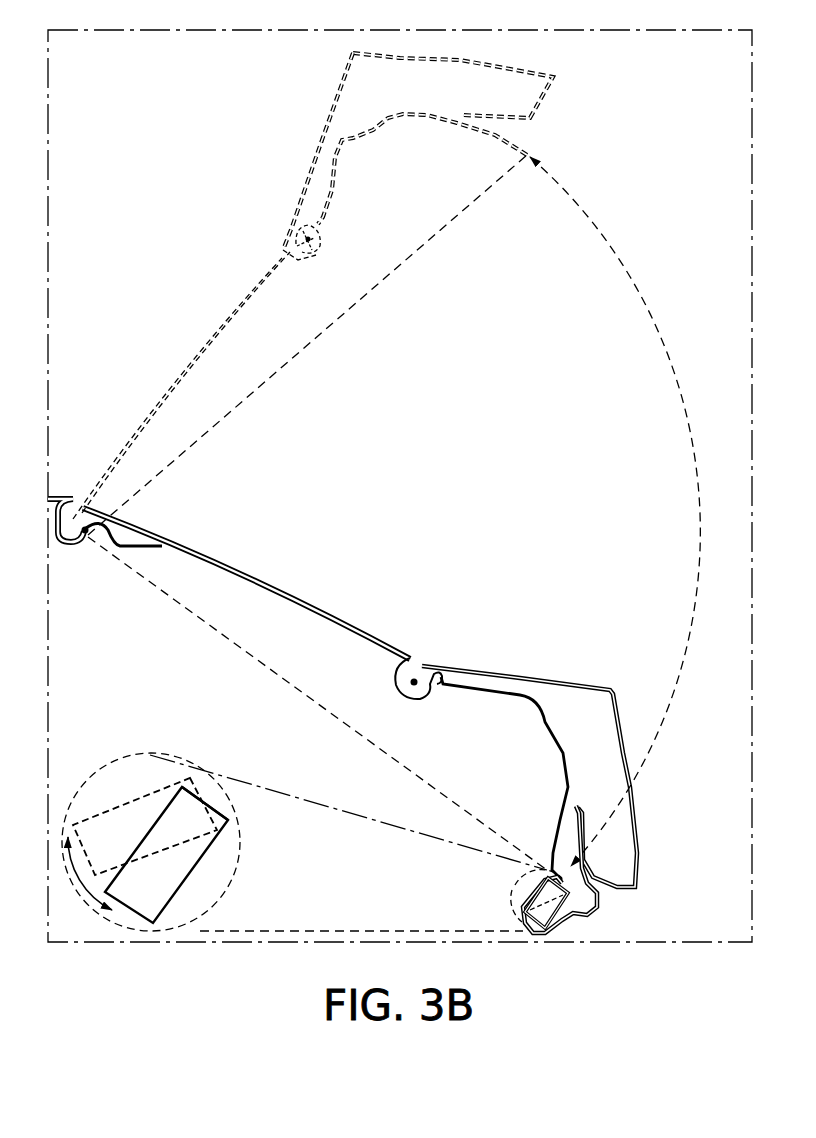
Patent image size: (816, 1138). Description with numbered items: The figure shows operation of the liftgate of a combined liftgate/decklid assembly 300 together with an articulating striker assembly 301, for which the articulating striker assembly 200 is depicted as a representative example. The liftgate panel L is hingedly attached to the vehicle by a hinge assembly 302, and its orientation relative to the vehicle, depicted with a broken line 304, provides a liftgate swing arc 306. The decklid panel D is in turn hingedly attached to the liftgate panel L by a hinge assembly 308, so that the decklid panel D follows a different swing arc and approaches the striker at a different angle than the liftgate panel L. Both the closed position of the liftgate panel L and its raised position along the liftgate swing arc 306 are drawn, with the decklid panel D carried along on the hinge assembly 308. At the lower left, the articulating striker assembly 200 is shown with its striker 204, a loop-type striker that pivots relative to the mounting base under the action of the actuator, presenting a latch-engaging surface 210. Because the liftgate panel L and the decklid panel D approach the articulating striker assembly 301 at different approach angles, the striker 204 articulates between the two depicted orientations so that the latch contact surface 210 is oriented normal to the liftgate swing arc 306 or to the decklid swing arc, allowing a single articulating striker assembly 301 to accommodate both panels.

The liftgate/decklid assembly 300 is at (374, 524).
The hinge assembly 302 is at (85, 542).
The broken line 304 is at (313, 318).
The liftgate swing arc 306 is at (655, 323).
The hinge assembly 308 is at (310, 248).
The articulating striker assembly 200 is at (576, 900).
The articulating striker assembly 301 is at (573, 928).
The striker 204 is at (108, 825).
The latch-engaging surface 210 is at (218, 777).
The liftgate panel L is at (190, 357).
The decklid panel D is at (333, 118).